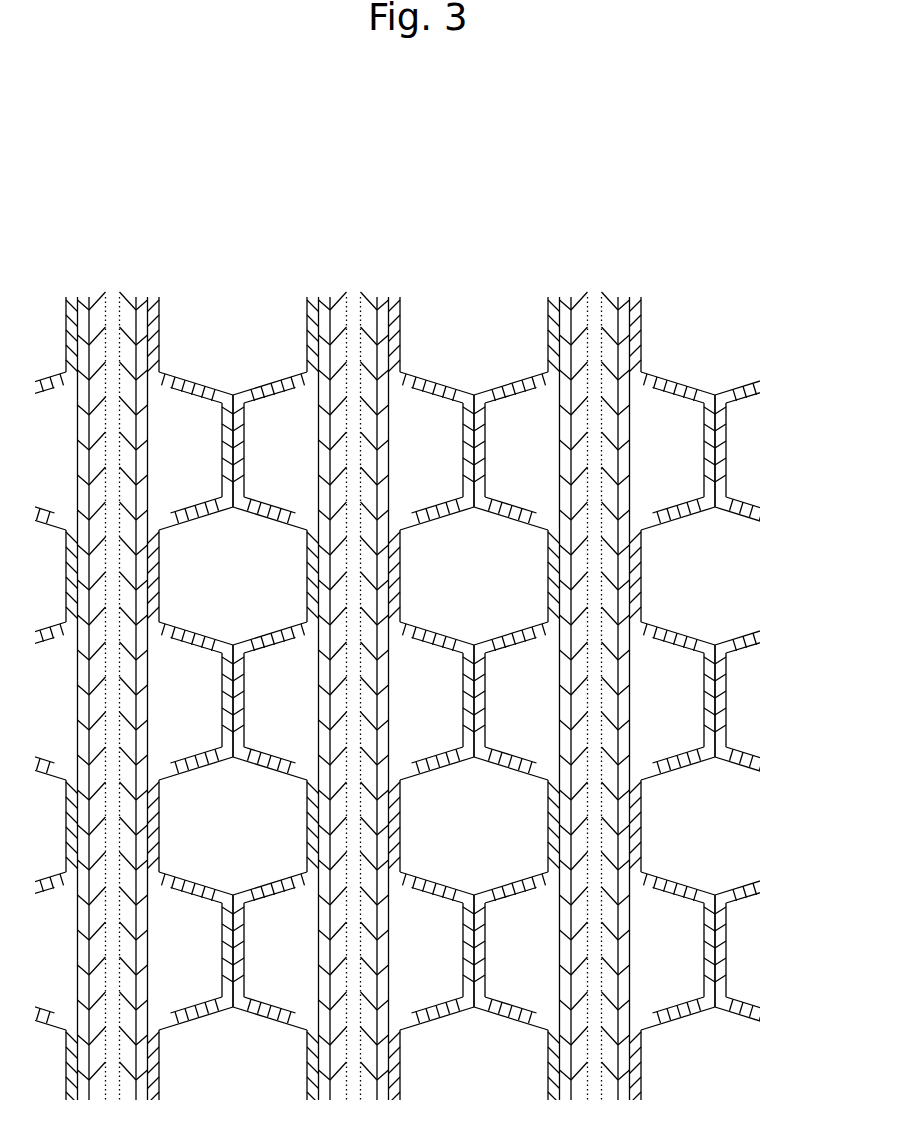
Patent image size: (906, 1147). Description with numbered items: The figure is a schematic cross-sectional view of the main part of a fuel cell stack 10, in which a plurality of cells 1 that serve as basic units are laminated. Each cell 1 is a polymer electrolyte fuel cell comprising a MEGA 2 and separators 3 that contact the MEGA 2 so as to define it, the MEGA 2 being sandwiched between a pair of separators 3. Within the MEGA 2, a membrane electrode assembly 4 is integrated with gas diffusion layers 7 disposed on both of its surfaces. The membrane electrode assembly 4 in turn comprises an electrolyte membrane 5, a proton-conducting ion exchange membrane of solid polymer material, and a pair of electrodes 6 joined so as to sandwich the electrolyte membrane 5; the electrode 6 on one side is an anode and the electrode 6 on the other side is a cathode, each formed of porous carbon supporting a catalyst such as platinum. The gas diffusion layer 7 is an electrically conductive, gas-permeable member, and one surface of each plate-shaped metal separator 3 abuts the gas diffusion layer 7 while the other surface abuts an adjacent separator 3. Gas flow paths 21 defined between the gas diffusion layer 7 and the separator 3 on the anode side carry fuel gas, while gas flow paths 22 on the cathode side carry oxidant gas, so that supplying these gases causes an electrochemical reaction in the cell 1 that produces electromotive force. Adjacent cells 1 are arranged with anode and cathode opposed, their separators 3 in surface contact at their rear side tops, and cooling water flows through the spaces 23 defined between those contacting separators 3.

The cell 1 is at (353, 623).
The MEGA 2 is at (354, 644).
The separator 3 is at (353, 280).
The membrane electrode assembly 4 is at (353, 659).
The electrolyte membrane 5 is at (354, 675).
The electrode 6 is at (353, 665).
The gas diffusion layer 7 is at (353, 675).
The fuel cell stack 10 is at (737, 179).
The gas flow path 21 is at (267, 461).
The gas flow path 22 is at (167, 461).
The space 23 is at (220, 586).